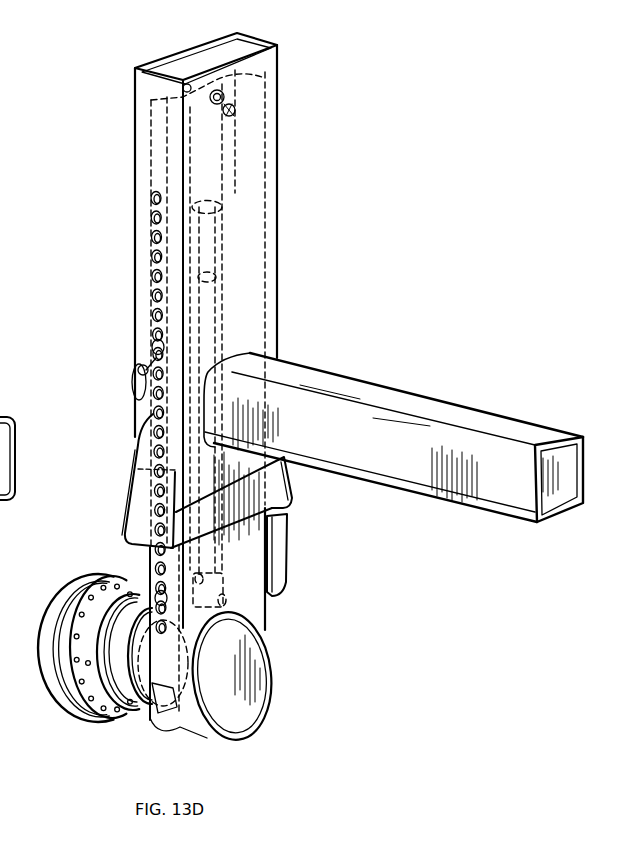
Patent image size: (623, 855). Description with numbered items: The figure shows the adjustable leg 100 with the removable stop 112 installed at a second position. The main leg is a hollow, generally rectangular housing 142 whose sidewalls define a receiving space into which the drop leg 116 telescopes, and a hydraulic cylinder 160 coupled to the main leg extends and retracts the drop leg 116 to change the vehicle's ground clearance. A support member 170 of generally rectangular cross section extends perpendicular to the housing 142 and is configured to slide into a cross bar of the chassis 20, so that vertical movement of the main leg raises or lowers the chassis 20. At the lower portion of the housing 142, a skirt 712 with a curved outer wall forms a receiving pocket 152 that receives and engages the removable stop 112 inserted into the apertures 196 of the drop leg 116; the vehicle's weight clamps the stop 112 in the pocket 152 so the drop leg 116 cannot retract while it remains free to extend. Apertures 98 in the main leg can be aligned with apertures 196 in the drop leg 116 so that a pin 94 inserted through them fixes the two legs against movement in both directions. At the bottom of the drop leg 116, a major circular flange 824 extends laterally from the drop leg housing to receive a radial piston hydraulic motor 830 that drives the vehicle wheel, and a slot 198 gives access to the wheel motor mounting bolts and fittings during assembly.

The adjustable leg 100 is at (302, 213).
The housing 142 is at (273, 67).
The drop leg 116 is at (264, 131).
The hydraulic cylinder 160 is at (223, 312).
The apertures 98 is at (157, 262).
The apertures 196 is at (148, 343).
The pin 94 is at (140, 368).
The skirt 712 is at (139, 440).
The removable stop 112 is at (278, 575).
The receiving pocket 152 is at (131, 560).
The slot 198 is at (180, 720).
The support member 170 is at (385, 392).
The chassis 20 is at (55, 710).
The radial piston hydraulic motor 830 is at (94, 718).
The major circular flange 824 is at (146, 714).